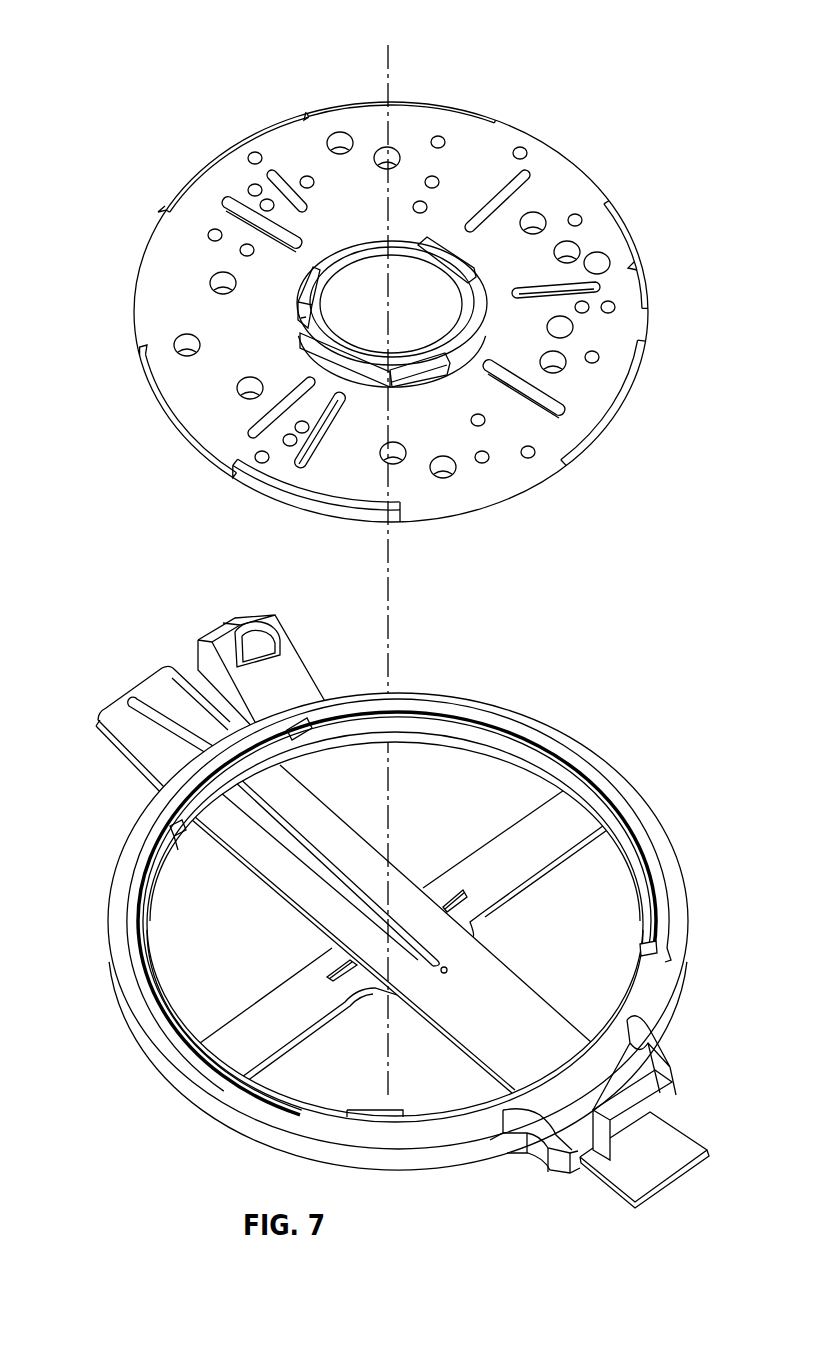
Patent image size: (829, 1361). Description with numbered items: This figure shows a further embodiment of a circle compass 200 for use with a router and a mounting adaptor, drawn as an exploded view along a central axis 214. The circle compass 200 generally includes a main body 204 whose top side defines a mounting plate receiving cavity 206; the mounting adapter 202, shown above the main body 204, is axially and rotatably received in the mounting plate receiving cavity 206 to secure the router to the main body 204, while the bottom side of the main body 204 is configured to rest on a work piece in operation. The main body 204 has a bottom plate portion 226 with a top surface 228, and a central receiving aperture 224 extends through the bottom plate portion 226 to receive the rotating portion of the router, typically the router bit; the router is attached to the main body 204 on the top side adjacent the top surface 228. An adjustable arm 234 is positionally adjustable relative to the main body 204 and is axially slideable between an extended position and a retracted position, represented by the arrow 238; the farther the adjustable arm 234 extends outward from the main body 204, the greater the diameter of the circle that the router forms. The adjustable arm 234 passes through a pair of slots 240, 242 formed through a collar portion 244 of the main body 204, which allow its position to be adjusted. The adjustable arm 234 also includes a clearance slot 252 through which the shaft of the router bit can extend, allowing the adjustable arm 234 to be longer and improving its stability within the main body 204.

The circle compass 200 is at (621, 86).
The mounting adapter 202 is at (608, 388).
The main body 204 is at (651, 830).
The mounting plate receiving cavity 206 is at (453, 776).
The central axis 214 is at (392, 592).
The central receiving aperture 224 is at (375, 903).
The bottom plate portion 226 is at (568, 807).
The top surface 228 is at (585, 817).
The adjustable arm 234 is at (525, 995).
The arrow 238 is at (770, 1160).
The slot 240 is at (577, 1184).
The slot 242 is at (191, 840).
The collar portion 244 is at (683, 906).
The clearance slot 252 is at (299, 906).